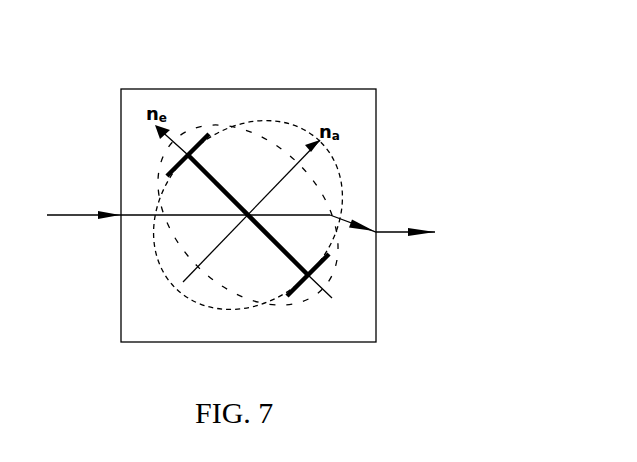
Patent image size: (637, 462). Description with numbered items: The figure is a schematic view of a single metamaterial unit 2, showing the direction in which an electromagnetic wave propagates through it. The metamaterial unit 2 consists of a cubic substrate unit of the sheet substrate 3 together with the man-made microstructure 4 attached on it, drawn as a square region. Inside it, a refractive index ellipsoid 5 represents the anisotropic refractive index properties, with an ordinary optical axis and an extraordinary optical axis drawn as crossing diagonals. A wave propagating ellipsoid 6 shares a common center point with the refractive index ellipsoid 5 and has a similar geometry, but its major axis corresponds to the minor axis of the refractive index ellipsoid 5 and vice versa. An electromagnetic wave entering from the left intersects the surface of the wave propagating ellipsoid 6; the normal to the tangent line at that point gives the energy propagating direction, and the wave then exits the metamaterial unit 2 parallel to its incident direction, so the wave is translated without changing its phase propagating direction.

The metamaterial unit 2 is at (247, 186).
The sheet substrate 3 is at (360, 127).
The man-made microstructure 4 is at (176, 163).
The refractive index ellipsoid 5 is at (280, 303).
The wave propagating ellipsoid 6 is at (268, 123).